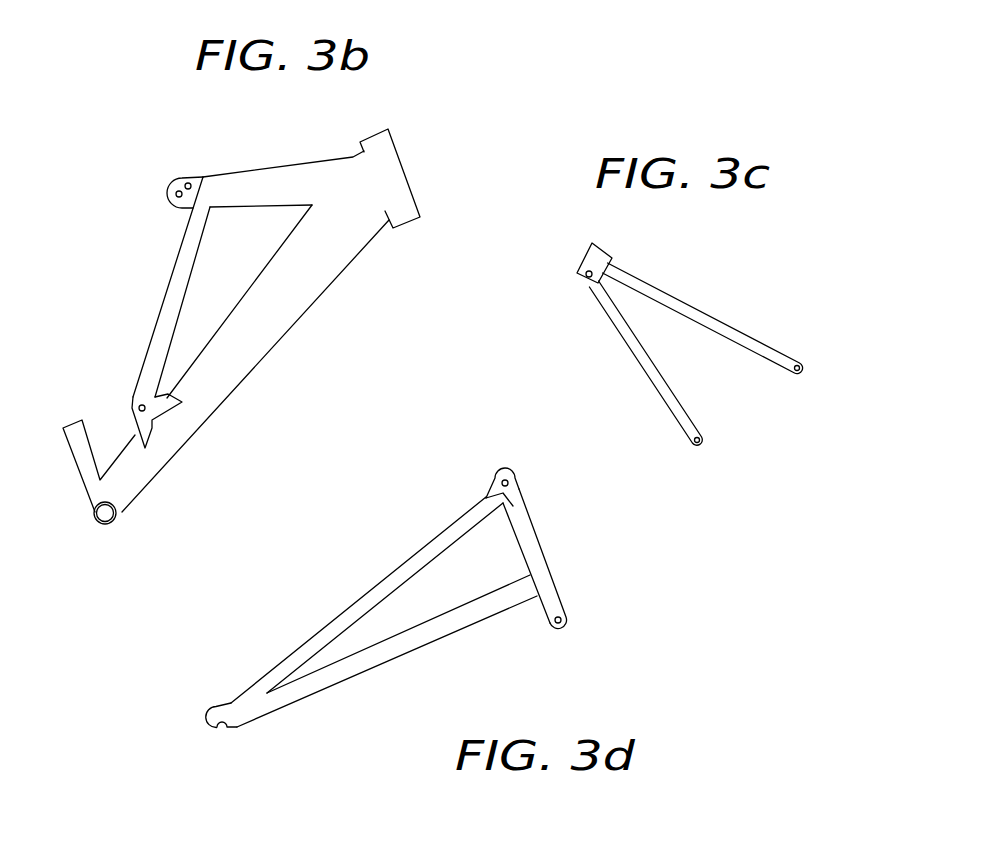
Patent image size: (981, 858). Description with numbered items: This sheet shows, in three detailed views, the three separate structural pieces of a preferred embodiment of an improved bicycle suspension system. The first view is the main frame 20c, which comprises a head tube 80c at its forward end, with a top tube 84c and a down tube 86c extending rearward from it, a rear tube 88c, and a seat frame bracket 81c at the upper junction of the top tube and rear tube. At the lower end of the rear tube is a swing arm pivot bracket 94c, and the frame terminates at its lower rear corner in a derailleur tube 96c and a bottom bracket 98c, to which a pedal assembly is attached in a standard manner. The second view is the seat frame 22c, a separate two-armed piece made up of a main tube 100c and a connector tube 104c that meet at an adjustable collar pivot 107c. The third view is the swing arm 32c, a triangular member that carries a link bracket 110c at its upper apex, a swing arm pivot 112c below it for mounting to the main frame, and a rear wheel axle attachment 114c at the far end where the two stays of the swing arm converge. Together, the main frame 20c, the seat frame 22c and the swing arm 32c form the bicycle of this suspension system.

In FIG. 3b, the main frame 20c is at (221, 440).
In FIG. 3b, the head tube 80c is at (403, 163).
In FIG. 3b, the seat frame bracket 81c is at (170, 179).
In FIG. 3b, the top tube 84c is at (262, 165).
In FIG. 3b, the down tube 86c is at (307, 308).
In FIG. 3b, the rear tube 88c is at (168, 292).
In FIG. 3b, the swing arm pivot bracket 94c is at (133, 397).
In FIG. 3b, the derailleur tube 96c is at (72, 460).
In FIG. 3b, the bottom bracket 98c is at (110, 523).
In FIG. 3c, the seat frame 22c is at (708, 272).
In FIG. 3c, the main tube 100c is at (725, 317).
In FIG. 3c, the connector tube 104c is at (630, 353).
In FIG. 3c, the adjustable collar pivot 107c is at (603, 243).
In FIG. 3d, the swing arm 32c is at (404, 670).
In FIG. 3d, the link bracket 110c is at (500, 471).
In FIG. 3d, the swing arm pivot 112c is at (558, 632).
In FIG. 3d, the rear wheel axle attachment 114c is at (205, 725).